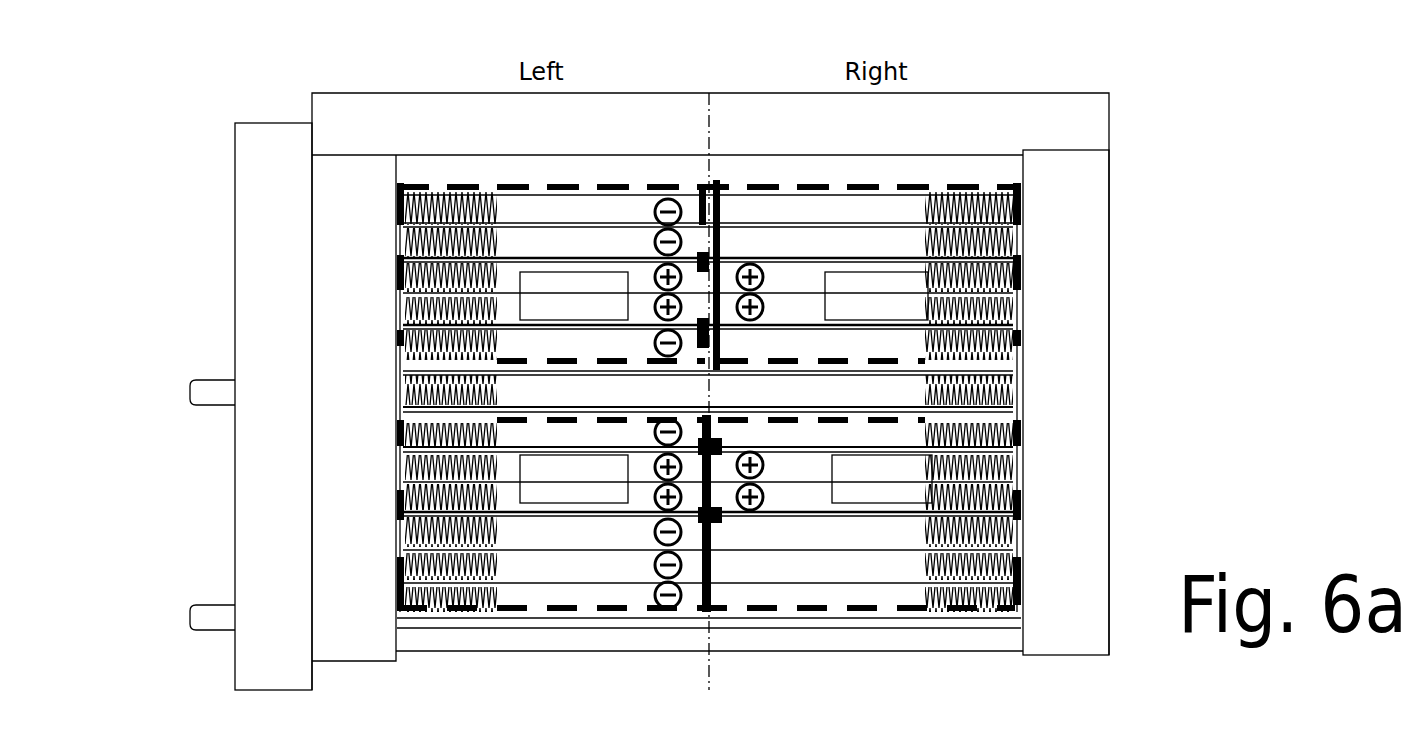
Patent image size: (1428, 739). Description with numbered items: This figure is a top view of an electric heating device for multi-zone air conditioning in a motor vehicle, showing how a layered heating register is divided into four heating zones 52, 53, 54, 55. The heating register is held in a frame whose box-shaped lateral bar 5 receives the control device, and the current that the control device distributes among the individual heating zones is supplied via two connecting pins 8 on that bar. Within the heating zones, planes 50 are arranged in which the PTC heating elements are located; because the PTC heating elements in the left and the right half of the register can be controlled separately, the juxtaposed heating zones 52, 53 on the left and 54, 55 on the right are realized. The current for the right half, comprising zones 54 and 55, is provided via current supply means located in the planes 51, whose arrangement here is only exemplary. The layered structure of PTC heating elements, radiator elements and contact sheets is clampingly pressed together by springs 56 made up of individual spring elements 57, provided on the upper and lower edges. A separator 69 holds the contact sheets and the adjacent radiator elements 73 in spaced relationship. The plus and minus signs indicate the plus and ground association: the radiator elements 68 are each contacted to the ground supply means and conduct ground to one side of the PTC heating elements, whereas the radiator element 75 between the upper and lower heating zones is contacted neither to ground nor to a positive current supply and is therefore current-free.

The lateral bar 5 is at (255, 165).
The connecting pins 8 is at (193, 385).
The planes 50 is at (1020, 257).
The planes 51 is at (1020, 363).
The heating zone 52 is at (556, 262).
The heating zone 53 is at (557, 515).
The heating zone 54 is at (862, 257).
The heating zone 55 is at (867, 515).
The springs 56 is at (395, 185).
The spring elements 57 is at (433, 190).
The radiator element 68 is at (397, 343).
The separator 69 is at (703, 250).
The radiator element 73 is at (407, 310).
The radiator element 75 is at (410, 393).